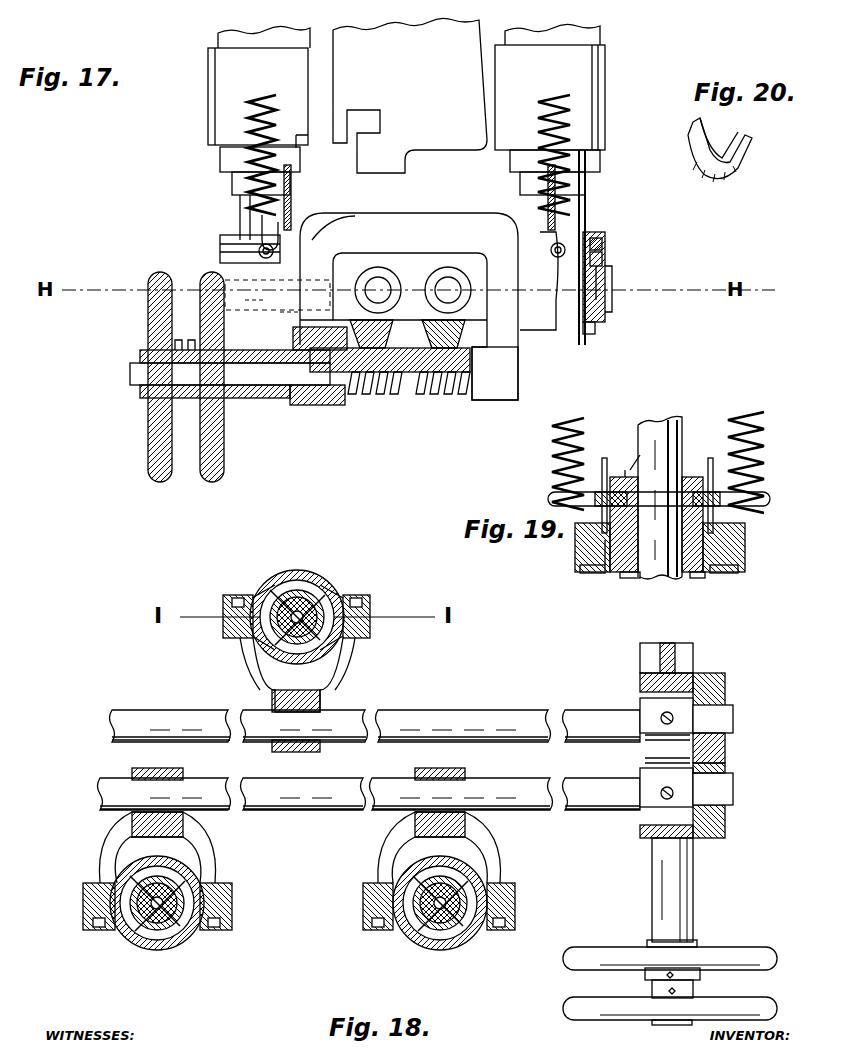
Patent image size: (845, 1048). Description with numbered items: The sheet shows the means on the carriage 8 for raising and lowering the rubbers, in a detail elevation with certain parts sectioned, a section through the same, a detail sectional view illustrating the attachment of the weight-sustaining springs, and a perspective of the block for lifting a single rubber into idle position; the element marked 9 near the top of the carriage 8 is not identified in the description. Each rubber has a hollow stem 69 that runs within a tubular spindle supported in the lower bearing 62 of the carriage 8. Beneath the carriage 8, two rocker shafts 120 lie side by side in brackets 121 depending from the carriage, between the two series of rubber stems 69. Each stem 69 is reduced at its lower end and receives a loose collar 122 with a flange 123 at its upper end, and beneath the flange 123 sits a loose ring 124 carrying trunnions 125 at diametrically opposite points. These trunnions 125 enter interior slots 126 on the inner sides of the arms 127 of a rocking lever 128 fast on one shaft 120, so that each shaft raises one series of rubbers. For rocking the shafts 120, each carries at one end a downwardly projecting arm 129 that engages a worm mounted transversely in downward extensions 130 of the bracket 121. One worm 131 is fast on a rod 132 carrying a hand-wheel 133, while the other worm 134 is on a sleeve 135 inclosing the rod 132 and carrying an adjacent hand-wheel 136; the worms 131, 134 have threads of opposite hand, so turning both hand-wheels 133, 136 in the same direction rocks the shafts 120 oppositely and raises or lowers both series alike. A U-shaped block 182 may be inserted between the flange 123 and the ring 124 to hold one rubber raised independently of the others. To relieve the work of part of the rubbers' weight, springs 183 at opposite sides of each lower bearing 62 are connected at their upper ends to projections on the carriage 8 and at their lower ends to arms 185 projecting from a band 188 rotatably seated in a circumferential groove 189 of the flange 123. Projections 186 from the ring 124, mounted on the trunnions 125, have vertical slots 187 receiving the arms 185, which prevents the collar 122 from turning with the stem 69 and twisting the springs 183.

In FIG. 17, the carriage 8 is at (410, 95).
In FIG. 17, the hood 9 is at (600, 40).
In FIG. 17, the lower bearing 62 is at (605, 80).
In FIG. 17, the stem 69 is at (588, 208).
In FIG. 19, the stem 69 is at (678, 420).
In FIG. 18, the stem 69 is at (297, 580).
In FIG. 17, the rocker shaft 120 is at (382, 282).
In FIG. 18, the rocker shaft 120 is at (500, 795).
In FIG. 17, the bracket 121 is at (448, 282).
In FIG. 18, the bracket 121 is at (725, 682).
In FIG. 17, the collar 122 is at (594, 332).
In FIG. 19, the collar 122 is at (628, 578).
In FIG. 18, the collar 122 is at (360, 630).
In FIG. 17, the flange 123 is at (600, 235).
In FIG. 19, the flange 123 is at (695, 475).
In FIG. 17, the ring 124 is at (608, 300).
In FIG. 19, the ring 124 is at (698, 578).
In FIG. 18, the ring 124 is at (168, 945).
In FIG. 19, the trunnion 125 is at (745, 538).
In FIG. 18, the trunnion 125 is at (232, 903).
In FIG. 17, the slot 126 is at (222, 258).
In FIG. 18, the slot 126 is at (214, 928).
In FIG. 17, the arm 127 is at (272, 303).
In FIG. 19, the arm 127 is at (732, 572).
In FIG. 18, the arm 127 is at (513, 915).
In FIG. 18, the rocking lever 128 is at (325, 700).
In FIG. 17, the arm 129 is at (388, 328).
In FIG. 18, the arm 129 is at (645, 782).
In FIG. 17, the downward extension 130 is at (498, 402).
In FIG. 17, the worm 131 is at (440, 398).
In FIG. 18, the worm 131 is at (725, 748).
In FIG. 17, the rod 132 is at (132, 375).
In FIG. 17, the hand-wheel 133 is at (150, 470).
In FIG. 18, the hand-wheel 133 is at (565, 1008).
In FIG. 17, the worm 134 is at (376, 396).
In FIG. 18, the worm 134 is at (725, 768).
In FIG. 17, the sleeve 135 is at (258, 390).
In FIG. 18, the sleeve 135 is at (690, 900).
In FIG. 17, the hand-wheel 136 is at (215, 478).
In FIG. 18, the hand-wheel 136 is at (725, 947).
In FIG. 17, the U-shaped block 182 is at (600, 270).
In FIG. 20, the U-shaped block 182 is at (726, 168).
In FIG. 19, the U-shaped block 182 is at (606, 572).
In FIG. 17, the spring 183 is at (548, 100).
In FIG. 19, the spring 183 is at (750, 418).
In FIG. 17, the arm 185 is at (554, 248).
In FIG. 19, the arm 185 is at (770, 496).
In FIG. 17, the projection 186 is at (556, 230).
In FIG. 19, the projection 186 is at (714, 468).
In FIG. 17, the vertical slot 187 is at (258, 228).
In FIG. 17, the band 188 is at (604, 250).
In FIG. 19, the band 188 is at (598, 492).
In FIG. 17, the circumferential groove 189 is at (604, 262).
In FIG. 19, the circumferential groove 189 is at (630, 478).